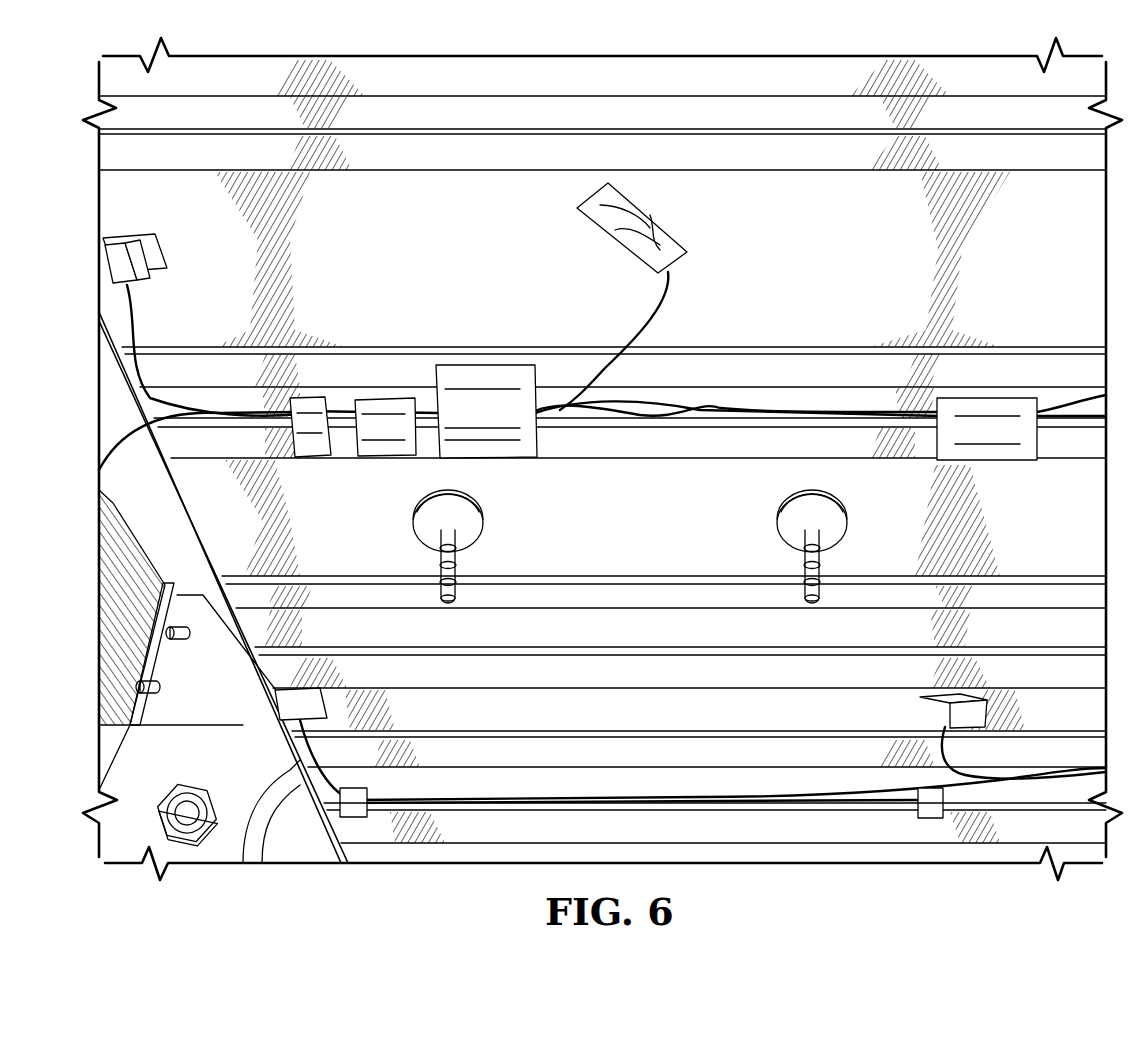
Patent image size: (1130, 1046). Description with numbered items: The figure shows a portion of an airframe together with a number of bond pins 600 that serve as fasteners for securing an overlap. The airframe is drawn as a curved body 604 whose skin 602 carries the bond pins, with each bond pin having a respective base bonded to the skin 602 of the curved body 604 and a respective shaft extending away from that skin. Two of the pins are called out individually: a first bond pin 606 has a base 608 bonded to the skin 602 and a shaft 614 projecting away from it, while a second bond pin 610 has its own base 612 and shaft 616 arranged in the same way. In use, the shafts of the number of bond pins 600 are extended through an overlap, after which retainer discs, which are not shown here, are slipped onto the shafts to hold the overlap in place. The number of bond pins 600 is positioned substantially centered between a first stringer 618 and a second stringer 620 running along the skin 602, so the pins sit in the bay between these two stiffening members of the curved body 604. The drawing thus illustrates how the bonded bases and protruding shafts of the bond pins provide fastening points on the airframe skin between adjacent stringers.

The number of bond pins 600 is at (368, 511).
The skin 602 is at (412, 275).
The curved body 604 is at (465, 84).
The first bond pin 606 is at (447, 567).
The base 608 is at (470, 533).
The second bond pin 610 is at (809, 567).
The base 612 is at (834, 533).
The shaft 614 is at (440, 588).
The shaft 616 is at (804, 588).
The first stringer 618 is at (803, 377).
The second stringer 620 is at (634, 600).